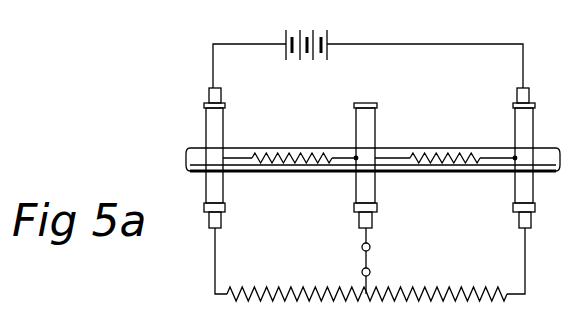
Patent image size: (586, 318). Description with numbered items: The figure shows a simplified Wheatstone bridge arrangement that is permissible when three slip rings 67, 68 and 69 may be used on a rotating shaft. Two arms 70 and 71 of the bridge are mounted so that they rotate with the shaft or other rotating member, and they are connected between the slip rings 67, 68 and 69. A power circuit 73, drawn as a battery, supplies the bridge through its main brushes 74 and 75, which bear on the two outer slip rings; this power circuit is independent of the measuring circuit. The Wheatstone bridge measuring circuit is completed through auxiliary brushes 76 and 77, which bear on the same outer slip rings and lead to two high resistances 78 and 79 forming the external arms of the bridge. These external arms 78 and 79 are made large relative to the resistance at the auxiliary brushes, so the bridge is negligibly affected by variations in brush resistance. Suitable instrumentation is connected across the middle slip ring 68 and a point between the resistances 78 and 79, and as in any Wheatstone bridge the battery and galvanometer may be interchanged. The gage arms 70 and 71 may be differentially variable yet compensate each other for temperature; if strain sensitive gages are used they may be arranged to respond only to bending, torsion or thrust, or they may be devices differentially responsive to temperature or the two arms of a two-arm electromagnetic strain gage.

The slip ring 67 is at (515, 200).
The slip ring 68 is at (362, 195).
The slip ring 69 is at (206, 198).
The bridge arm 70 is at (263, 154).
The bridge arm 71 is at (431, 153).
The power circuit 73 is at (352, 44).
The main brush 74 is at (529, 96).
The main brush 75 is at (209, 96).
The auxiliary brush 76 is at (221, 223).
The auxiliary brush 77 is at (531, 222).
The high resistance 78 is at (279, 293).
The high resistance 79 is at (450, 283).